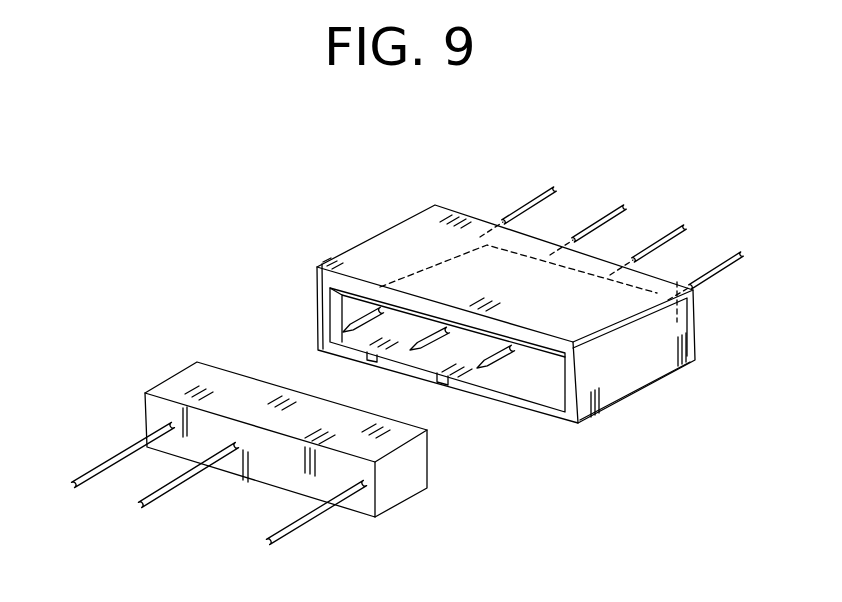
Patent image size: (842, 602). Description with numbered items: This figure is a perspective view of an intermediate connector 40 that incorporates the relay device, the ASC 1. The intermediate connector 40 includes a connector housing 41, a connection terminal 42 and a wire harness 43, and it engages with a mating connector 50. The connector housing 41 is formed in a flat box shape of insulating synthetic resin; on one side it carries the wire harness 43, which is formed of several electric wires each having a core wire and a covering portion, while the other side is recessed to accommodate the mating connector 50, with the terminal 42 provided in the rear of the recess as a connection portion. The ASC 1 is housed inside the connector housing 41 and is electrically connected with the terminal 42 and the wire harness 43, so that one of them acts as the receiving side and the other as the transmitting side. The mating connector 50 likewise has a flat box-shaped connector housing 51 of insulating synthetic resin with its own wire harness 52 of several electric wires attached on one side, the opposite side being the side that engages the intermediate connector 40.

The ASC 1 is at (512, 311).
The intermediate connector 40 is at (384, 236).
The connector housing 41 is at (607, 382).
The connection terminal 42 is at (343, 333).
The wire harness 43 is at (542, 180).
The mating connector 50 is at (255, 432).
The connector housing 51 is at (407, 480).
The wire harness 52 is at (275, 556).